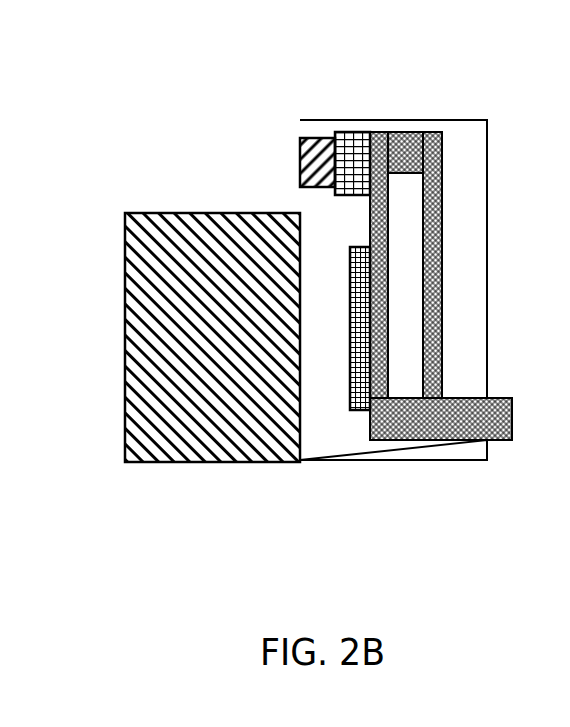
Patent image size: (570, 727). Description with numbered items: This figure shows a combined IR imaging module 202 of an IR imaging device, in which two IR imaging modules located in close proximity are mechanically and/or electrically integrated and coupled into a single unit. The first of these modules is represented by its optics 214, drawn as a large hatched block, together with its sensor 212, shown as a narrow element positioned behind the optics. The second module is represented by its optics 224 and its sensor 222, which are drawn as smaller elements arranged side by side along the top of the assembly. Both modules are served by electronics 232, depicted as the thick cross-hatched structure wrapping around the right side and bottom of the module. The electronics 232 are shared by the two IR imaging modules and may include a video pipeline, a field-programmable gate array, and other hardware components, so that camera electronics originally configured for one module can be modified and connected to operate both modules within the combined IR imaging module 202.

The combined IR imaging module 202 is at (122, 88).
The sensor 212 is at (362, 410).
The optics 214 is at (182, 462).
The sensor 222 is at (348, 133).
The optics 224 is at (315, 137).
The electronics 232 is at (372, 448).